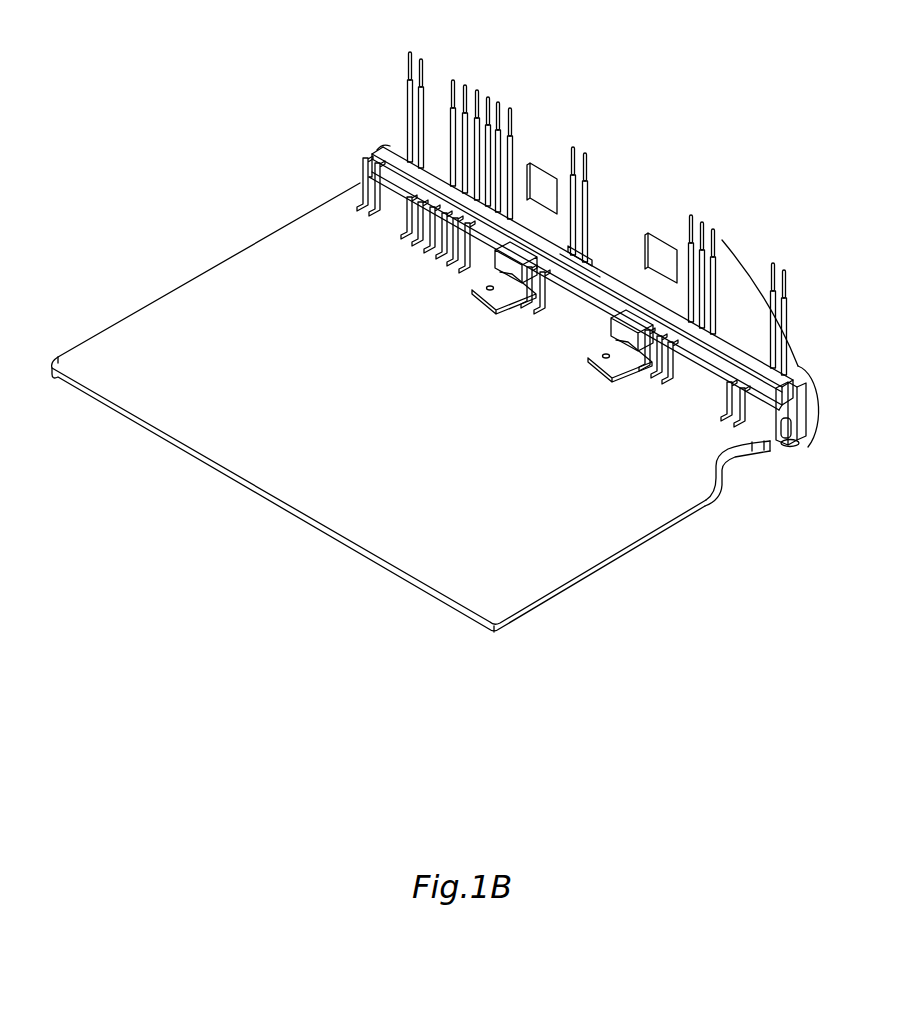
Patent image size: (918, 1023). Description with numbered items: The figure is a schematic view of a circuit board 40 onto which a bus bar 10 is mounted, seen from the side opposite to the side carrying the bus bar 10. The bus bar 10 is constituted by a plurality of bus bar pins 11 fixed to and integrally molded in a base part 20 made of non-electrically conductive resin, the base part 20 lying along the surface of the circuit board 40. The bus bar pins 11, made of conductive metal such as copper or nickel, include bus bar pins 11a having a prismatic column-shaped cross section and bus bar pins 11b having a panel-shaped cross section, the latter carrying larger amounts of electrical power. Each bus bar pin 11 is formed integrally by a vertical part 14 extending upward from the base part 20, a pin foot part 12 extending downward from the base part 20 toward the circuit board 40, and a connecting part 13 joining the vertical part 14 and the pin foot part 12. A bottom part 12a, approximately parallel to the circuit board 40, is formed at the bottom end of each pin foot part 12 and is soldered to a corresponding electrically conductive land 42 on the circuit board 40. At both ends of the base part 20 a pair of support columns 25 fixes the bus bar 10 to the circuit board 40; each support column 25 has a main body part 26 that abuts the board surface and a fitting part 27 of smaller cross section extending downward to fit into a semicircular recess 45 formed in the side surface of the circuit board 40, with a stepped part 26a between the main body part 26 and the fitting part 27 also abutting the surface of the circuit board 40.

The bus bar 10 is at (555, 289).
The bus bar pins 11 is at (611, 199).
The bus bar pins having a prismatic column-shaped cross section 11a is at (578, 151).
The bus bar pins having a panel-shaped cross section 11b is at (531, 162).
The pin foot part 12 is at (575, 311).
The bottom part 12a is at (548, 293).
The connecting part 13 is at (614, 228).
The vertical part 14 is at (590, 183).
The base part 20 is at (355, 185).
The support columns 25 is at (356, 160).
The main body part 26 is at (798, 397).
The stepped part 26a is at (783, 444).
The fitting part 27 is at (790, 445).
The circuit board 40 is at (90, 333).
The land 42 is at (527, 314).
The recesses 45 is at (800, 432).